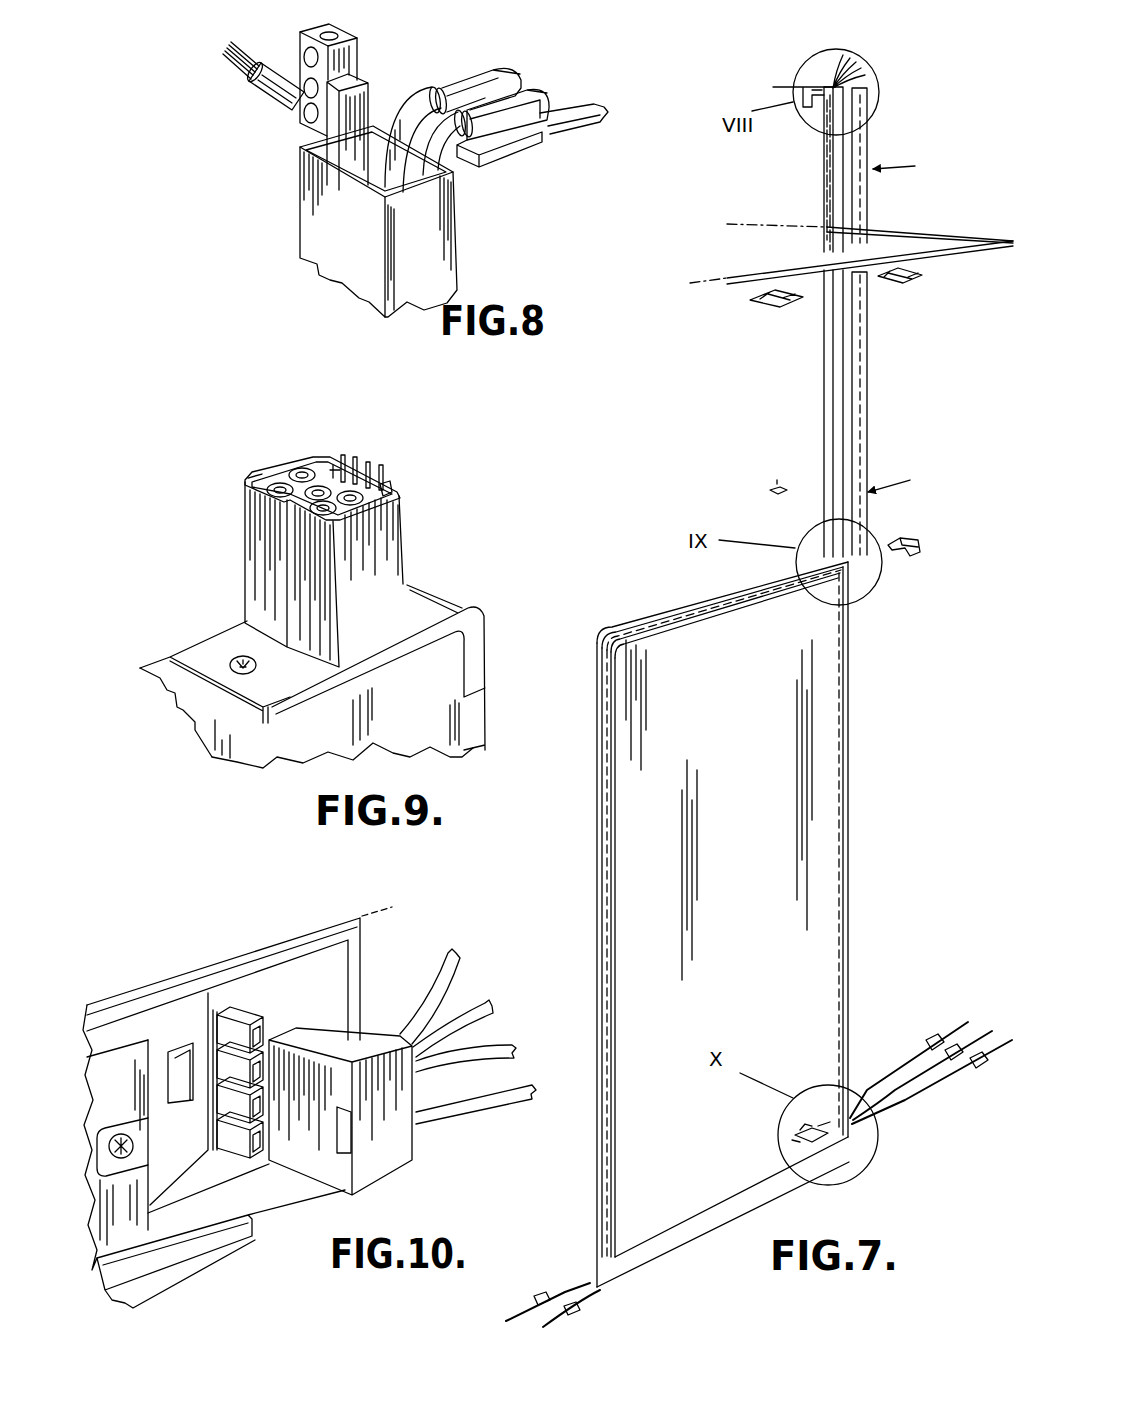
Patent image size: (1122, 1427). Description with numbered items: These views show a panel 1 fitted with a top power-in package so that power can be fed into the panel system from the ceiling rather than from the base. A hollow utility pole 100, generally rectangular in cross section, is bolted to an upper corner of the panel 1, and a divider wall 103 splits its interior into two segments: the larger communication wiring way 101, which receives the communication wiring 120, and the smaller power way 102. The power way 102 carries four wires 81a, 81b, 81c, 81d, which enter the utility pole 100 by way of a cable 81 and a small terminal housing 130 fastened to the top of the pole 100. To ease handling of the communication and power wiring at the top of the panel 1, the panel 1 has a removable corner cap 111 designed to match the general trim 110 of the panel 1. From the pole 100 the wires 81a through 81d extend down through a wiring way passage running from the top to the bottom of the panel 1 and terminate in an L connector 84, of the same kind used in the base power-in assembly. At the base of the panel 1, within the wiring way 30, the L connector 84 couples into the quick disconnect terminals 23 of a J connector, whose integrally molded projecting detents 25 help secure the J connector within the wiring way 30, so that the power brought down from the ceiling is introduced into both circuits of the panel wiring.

In FIG. 7, the panel 1 is at (755, 888).
In FIG. 10, the quick disconnect terminals 23 is at (228, 1130).
In FIG. 10, the projecting detents 25 is at (197, 1092).
In FIG. 10, the wiring way 30 is at (168, 1021).
In FIG. 8, the cable 81 is at (277, 98).
In FIG. 9, the wire 81a is at (343, 454).
In FIG. 10, the wire 81a is at (441, 970).
In FIG. 9, the wire 81b is at (356, 456).
In FIG. 10, the wire 81b is at (468, 993).
In FIG. 9, the wire 81c is at (370, 461).
In FIG. 10, the wire 81c is at (497, 1038).
In FIG. 9, the wire 81d is at (384, 465).
In FIG. 10, the wire 81d is at (504, 1108).
In FIG. 10, the L connector 84 is at (306, 1143).
In FIG. 8, the utility pole 100 is at (314, 210).
In FIG. 9, the utility pole 100 is at (257, 544).
In FIG. 7, the utility pole 100 is at (823, 347).
In FIG. 9, the communication wiring way 101 is at (287, 470).
In FIG. 9, the power way 102 is at (392, 492).
In FIG. 9, the divider wall 103 is at (335, 468).
In FIG. 9, the trim 110 is at (222, 710).
In FIG. 7, the trim 110 is at (652, 622).
In FIG. 9, the corner cap 111 is at (440, 603).
In FIG. 7, the corner cap 111 is at (906, 540).
In FIG. 8, the communication wiring 120 is at (488, 97).
In FIG. 9, the communication wiring 120 is at (247, 479).
In FIG. 8, the terminal housing 130 is at (364, 59).